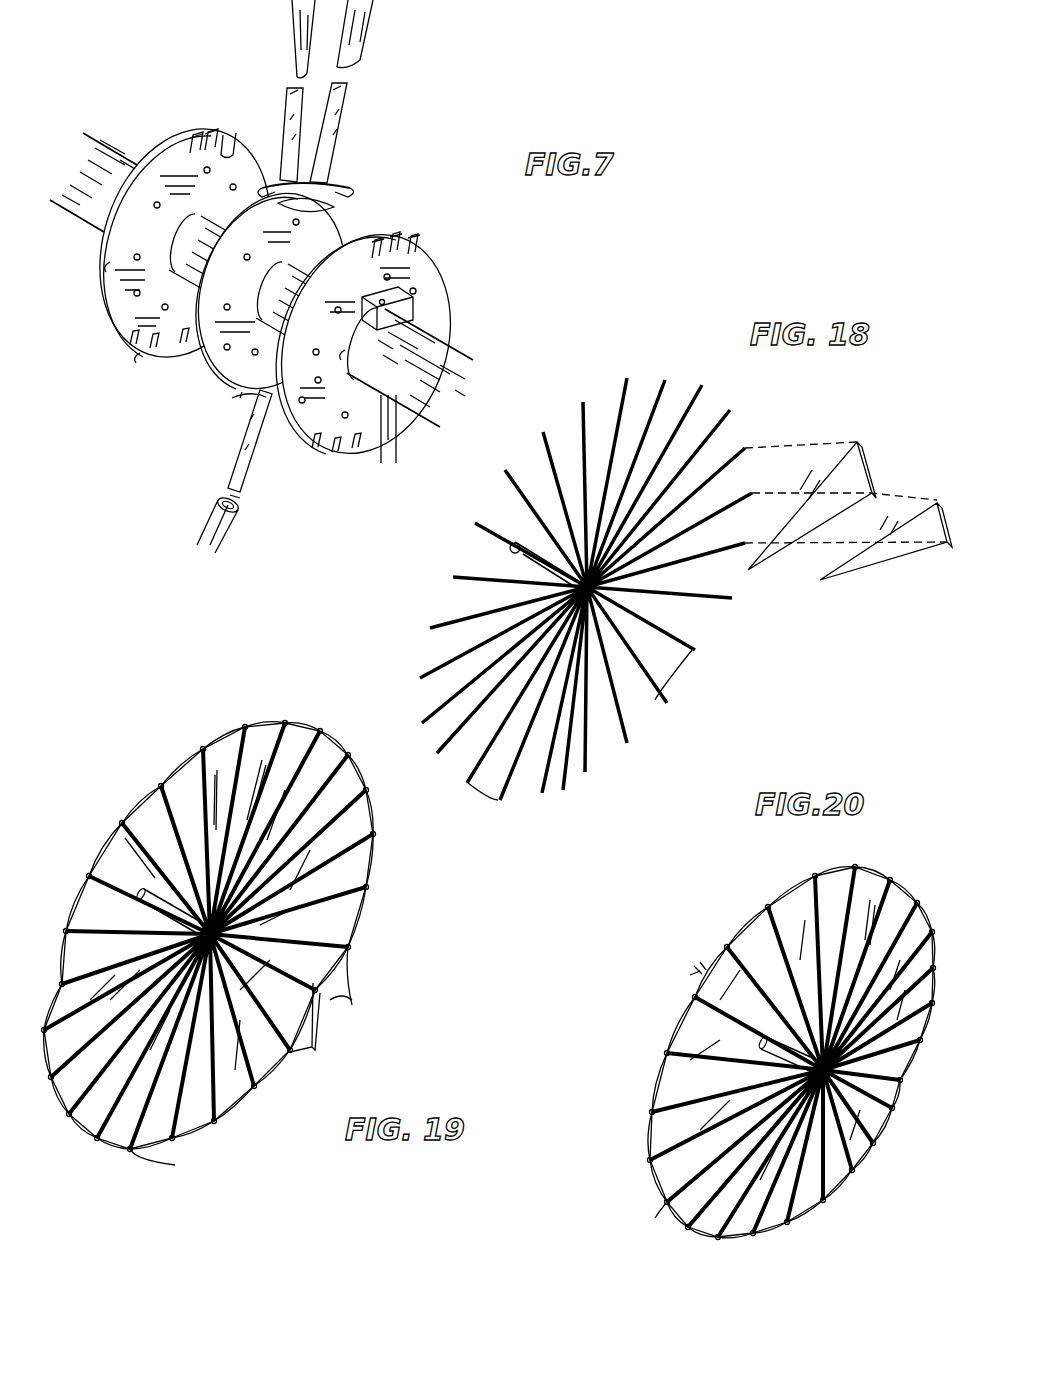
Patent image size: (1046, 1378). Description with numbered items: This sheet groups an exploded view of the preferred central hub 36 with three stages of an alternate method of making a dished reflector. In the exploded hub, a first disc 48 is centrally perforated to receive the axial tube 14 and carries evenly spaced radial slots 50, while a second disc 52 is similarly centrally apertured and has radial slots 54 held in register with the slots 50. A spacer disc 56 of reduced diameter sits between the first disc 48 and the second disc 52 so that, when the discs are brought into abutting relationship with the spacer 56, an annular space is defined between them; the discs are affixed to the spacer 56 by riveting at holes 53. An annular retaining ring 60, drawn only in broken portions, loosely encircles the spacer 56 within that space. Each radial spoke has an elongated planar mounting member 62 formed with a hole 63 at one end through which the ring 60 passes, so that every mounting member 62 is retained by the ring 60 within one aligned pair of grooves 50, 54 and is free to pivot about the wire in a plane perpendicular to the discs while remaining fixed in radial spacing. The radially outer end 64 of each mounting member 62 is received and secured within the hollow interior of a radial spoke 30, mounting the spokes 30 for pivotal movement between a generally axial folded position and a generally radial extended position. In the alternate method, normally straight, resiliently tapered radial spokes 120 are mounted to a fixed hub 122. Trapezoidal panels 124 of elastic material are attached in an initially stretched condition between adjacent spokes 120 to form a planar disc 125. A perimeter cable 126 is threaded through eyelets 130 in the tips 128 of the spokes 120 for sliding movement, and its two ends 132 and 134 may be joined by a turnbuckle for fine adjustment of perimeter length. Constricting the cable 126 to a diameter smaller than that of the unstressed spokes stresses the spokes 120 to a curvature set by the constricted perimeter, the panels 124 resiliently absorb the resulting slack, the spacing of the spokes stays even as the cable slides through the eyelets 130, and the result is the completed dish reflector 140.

In FIG. 7, the axial tube 14 is at (95, 210).
In FIG. 7, the radial spoke 30 is at (300, 25).
In FIG. 7, the central hub 36 is at (455, 158).
In FIG. 7, the first disc 48 is at (152, 162).
In FIG. 7, the radial slots 50 is at (213, 140).
In FIG. 7, the second disc 52 is at (440, 292).
In FIG. 7, the holes 53 is at (110, 262).
In FIG. 7, the radial slots 54 is at (412, 245).
In FIG. 7, the spacer disc 56 is at (240, 350).
In FIG. 7, the annular retaining ring 60 is at (335, 183).
In FIG. 7, the mounting member 62 is at (330, 130).
In FIG. 7, the hole 63 is at (325, 205).
In FIG. 7, the radially outer end 64 is at (338, 88).
In FIG. 18, the radial spokes 120 is at (735, 425).
In FIG. 19, the radial spokes 120 is at (208, 936).
In FIG. 20, the radial spokes 120 is at (791, 1052).
In FIG. 18, the fixed hub 122 is at (620, 560).
In FIG. 19, the fixed hub 122 is at (362, 905).
In FIG. 20, the fixed hub 122 is at (800, 1130).
In FIG. 18, the trapezoidal panels 124 is at (850, 468).
In FIG. 19, the planar disc 125 is at (258, 735).
In FIG. 20, the planar disc 125 is at (842, 882).
In FIG. 19, the perimeter cable 126 is at (372, 865).
In FIG. 20, the perimeter cable 126 is at (800, 892).
In FIG. 18, the tips 128 is at (690, 640).
In FIG. 18, the eyelets 130 is at (480, 800).
In FIG. 19, the eyelets 130 is at (365, 943).
In FIG. 20, the eyelets 130 is at (665, 1213).
In FIG. 19, the cable end 132 is at (305, 1077).
In FIG. 20, the cable end 132 is at (700, 968).
In FIG. 19, the cable end 134 is at (355, 1000).
In FIG. 20, the cable end 134 is at (700, 972).
In FIG. 20, the dish reflector 140 is at (700, 1045).